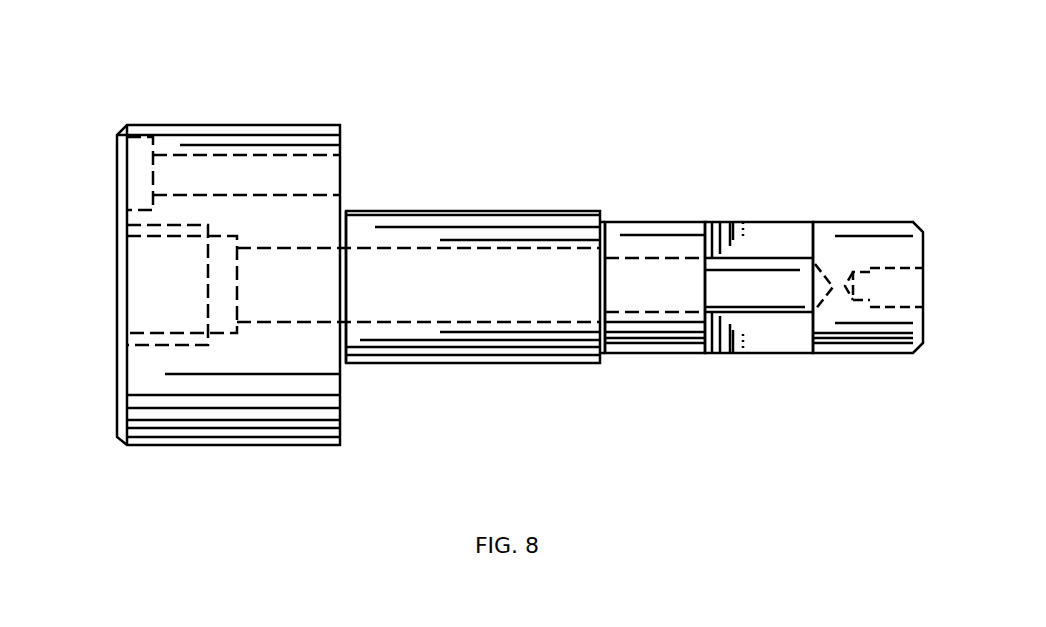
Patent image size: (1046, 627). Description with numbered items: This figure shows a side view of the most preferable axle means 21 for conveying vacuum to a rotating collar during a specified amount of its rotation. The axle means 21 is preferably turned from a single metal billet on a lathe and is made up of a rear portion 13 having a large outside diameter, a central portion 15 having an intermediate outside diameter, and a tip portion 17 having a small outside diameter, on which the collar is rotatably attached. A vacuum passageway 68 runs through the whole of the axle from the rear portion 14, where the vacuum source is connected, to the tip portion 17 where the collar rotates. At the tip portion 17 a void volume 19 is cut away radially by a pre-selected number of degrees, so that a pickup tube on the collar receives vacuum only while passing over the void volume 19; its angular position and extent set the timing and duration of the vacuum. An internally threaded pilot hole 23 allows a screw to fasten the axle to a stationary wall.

The rear portion 13 is at (245, 403).
The rear portion 14 is at (208, 277).
The central portion 15 is at (443, 220).
The tip portion 17 is at (657, 232).
The void volume 19 is at (763, 337).
The axle means 21 is at (541, 184).
The pilot hole 23 is at (198, 168).
The vacuum passageway 68 is at (512, 287).